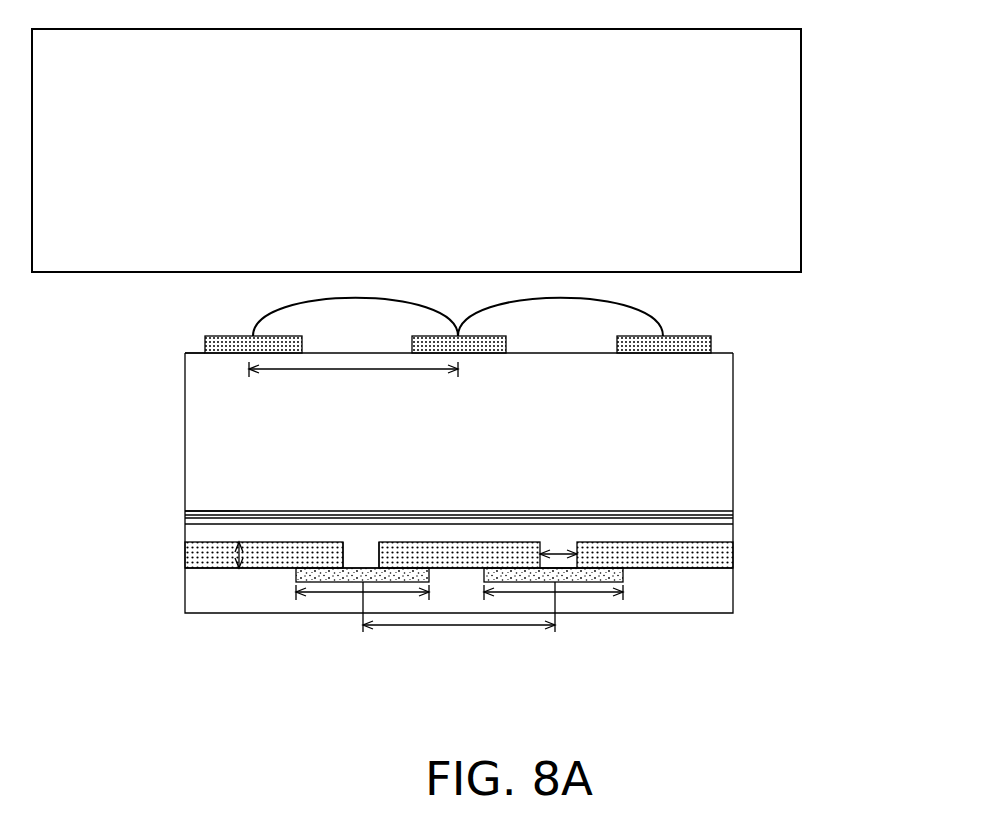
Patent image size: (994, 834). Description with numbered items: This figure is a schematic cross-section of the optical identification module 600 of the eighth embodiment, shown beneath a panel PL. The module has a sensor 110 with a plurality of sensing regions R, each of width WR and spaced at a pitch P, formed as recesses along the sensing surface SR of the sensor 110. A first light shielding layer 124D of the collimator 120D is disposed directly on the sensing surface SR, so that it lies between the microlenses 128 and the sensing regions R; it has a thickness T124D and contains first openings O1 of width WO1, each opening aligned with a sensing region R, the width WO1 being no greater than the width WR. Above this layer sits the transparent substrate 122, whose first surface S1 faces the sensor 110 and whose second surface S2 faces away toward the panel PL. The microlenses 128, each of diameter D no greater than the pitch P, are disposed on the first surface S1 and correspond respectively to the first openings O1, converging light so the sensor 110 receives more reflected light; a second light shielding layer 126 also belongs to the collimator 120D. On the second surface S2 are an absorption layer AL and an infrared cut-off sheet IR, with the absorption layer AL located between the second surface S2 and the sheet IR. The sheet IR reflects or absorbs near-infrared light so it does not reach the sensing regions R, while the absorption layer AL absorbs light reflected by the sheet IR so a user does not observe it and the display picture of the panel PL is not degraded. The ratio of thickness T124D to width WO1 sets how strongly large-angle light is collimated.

The panel PL is at (801, 152).
The sensor 110 is at (725, 592).
The sensing regions R is at (484, 577).
The collimator 120D is at (868, 330).
The transparent substrate 122 is at (700, 436).
The absorption layer AL is at (185, 513).
The infrared cut-off sheet IR is at (185, 520).
The first light shielding layer 124D is at (718, 547).
The second light shielding layer 126 is at (713, 343).
The microlenses 128 is at (627, 321).
The first surface S1 is at (189, 349).
The second surface S2 is at (210, 514).
The diameter D is at (287, 370).
The first openings O1 is at (358, 552).
The thickness of the first light shielding layer T124D is at (239, 555).
The width of each sensing region WR is at (353, 592).
The pitch P is at (407, 626).
The width of each first opening WO1 is at (552, 560).
The sensing surface SR is at (563, 565).
The optical identification module 600 is at (492, 366).